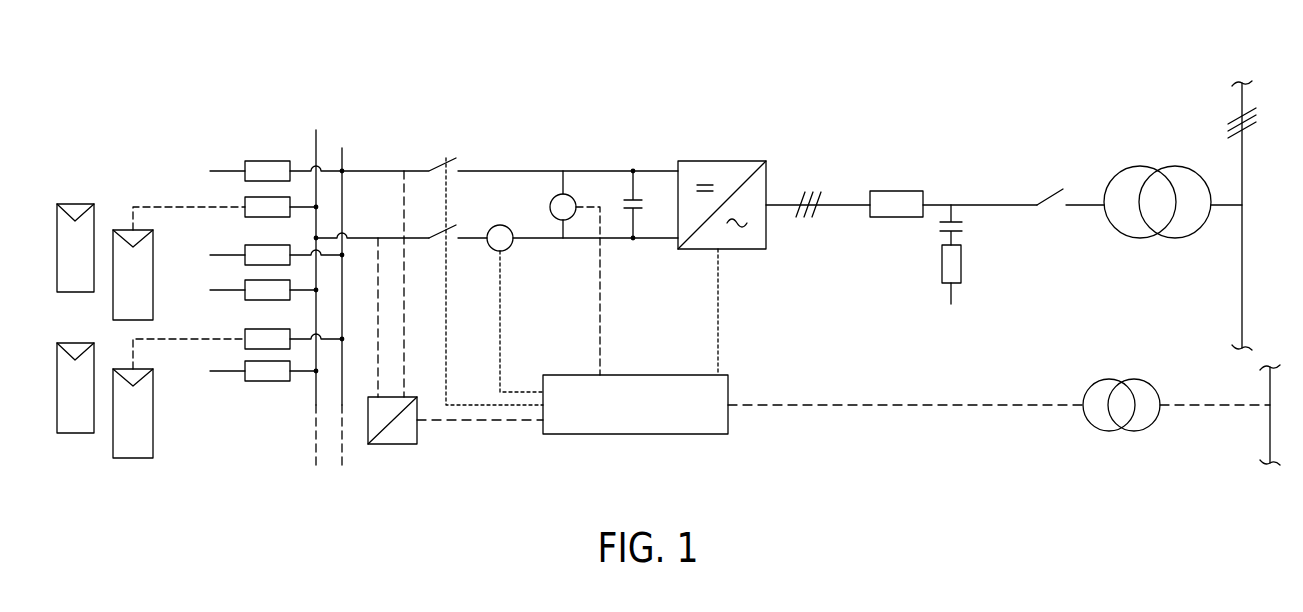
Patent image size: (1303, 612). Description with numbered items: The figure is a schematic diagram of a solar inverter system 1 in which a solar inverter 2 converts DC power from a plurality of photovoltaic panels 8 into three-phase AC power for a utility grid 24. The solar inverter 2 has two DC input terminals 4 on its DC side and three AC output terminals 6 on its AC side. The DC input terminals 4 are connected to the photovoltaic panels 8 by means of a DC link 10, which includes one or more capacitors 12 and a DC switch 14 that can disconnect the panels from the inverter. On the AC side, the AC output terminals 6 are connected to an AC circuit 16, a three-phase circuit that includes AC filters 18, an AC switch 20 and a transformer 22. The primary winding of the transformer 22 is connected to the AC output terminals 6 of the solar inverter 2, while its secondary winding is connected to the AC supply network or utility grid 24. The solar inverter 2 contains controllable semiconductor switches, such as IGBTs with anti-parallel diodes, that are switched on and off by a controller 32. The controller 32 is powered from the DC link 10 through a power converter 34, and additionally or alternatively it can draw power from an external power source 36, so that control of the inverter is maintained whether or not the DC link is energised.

The solar inverter system 1 is at (1146, 40).
The solar inverter 2 is at (722, 161).
The DC input terminals 4 is at (654, 171).
The AC output terminals 6 is at (768, 203).
The photovoltaic panels 8 is at (113, 186).
The DC link 10 is at (517, 170).
The capacitors 12 is at (609, 196).
The DC switch 14 is at (433, 160).
The AC circuit 16 is at (988, 195).
The AC filters 18 is at (932, 234).
The AC switch 20 is at (1057, 212).
The transformer 22 is at (1145, 166).
The utility grid 24 is at (1240, 303).
The controller 32 is at (906, 404).
The power converter 34 is at (392, 446).
The external power source 36 is at (1268, 433).